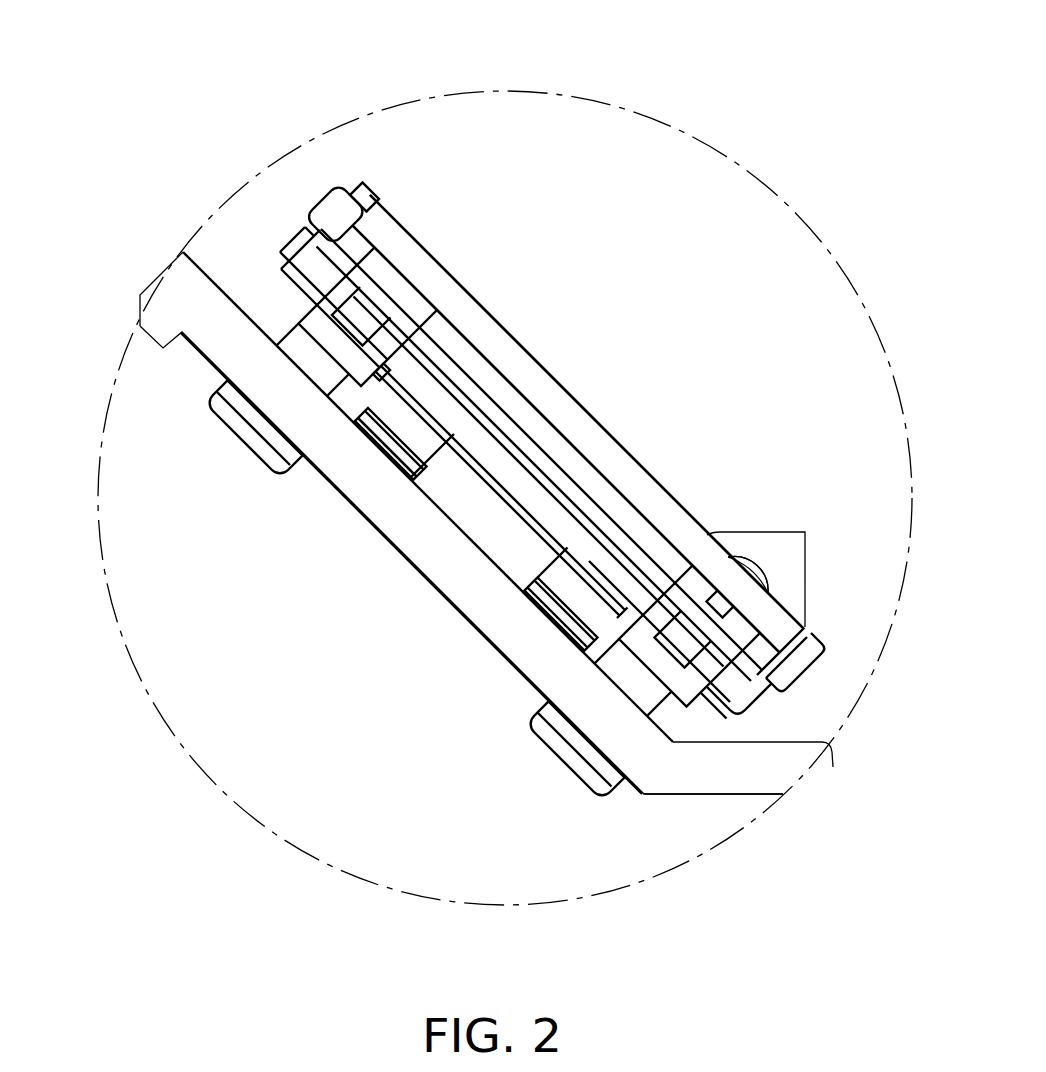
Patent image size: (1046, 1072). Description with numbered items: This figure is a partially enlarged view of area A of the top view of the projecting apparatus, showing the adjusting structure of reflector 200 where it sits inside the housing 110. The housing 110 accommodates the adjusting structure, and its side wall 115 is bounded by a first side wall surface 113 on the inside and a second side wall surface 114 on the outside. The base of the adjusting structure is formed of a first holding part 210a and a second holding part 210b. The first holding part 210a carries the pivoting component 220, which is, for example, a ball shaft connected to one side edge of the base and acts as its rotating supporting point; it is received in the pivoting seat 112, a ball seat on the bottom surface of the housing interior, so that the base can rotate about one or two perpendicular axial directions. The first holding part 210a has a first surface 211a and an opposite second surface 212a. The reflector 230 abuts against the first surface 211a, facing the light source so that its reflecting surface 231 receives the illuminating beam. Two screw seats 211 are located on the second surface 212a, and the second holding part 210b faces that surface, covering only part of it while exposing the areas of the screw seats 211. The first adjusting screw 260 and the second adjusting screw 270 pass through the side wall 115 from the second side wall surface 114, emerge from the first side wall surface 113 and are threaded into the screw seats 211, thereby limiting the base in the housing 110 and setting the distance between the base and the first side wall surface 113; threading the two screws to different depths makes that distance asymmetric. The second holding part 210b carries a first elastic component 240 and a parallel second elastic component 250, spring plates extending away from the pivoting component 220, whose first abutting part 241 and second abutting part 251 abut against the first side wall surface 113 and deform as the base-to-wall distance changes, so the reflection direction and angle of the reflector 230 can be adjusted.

The area A is at (505, 498).
The housing 110 is at (445, 560).
The pivoting seat 112 is at (814, 464).
The first side wall surface 113 is at (428, 445).
The second side wall surface 114 is at (358, 563).
The side wall 115 is at (163, 261).
The adjusting structure of reflector 200 is at (392, 112).
The first holding part 210a is at (784, 793).
The second holding part 210b is at (799, 756).
The screw seats 211 is at (519, 504).
The first surface 211a is at (620, 426).
The second surface 212a is at (436, 583).
The pivoting component 220 is at (833, 605).
The reflector 230 is at (564, 365).
The reflecting surface 231 is at (629, 412).
The first elastic component 240 is at (497, 742).
The first abutting part 241 is at (503, 772).
The second elastic component 250 is at (313, 603).
The second abutting part 251 is at (275, 603).
The first adjusting screw 260 is at (575, 823).
The second adjusting screw 270 is at (200, 564).